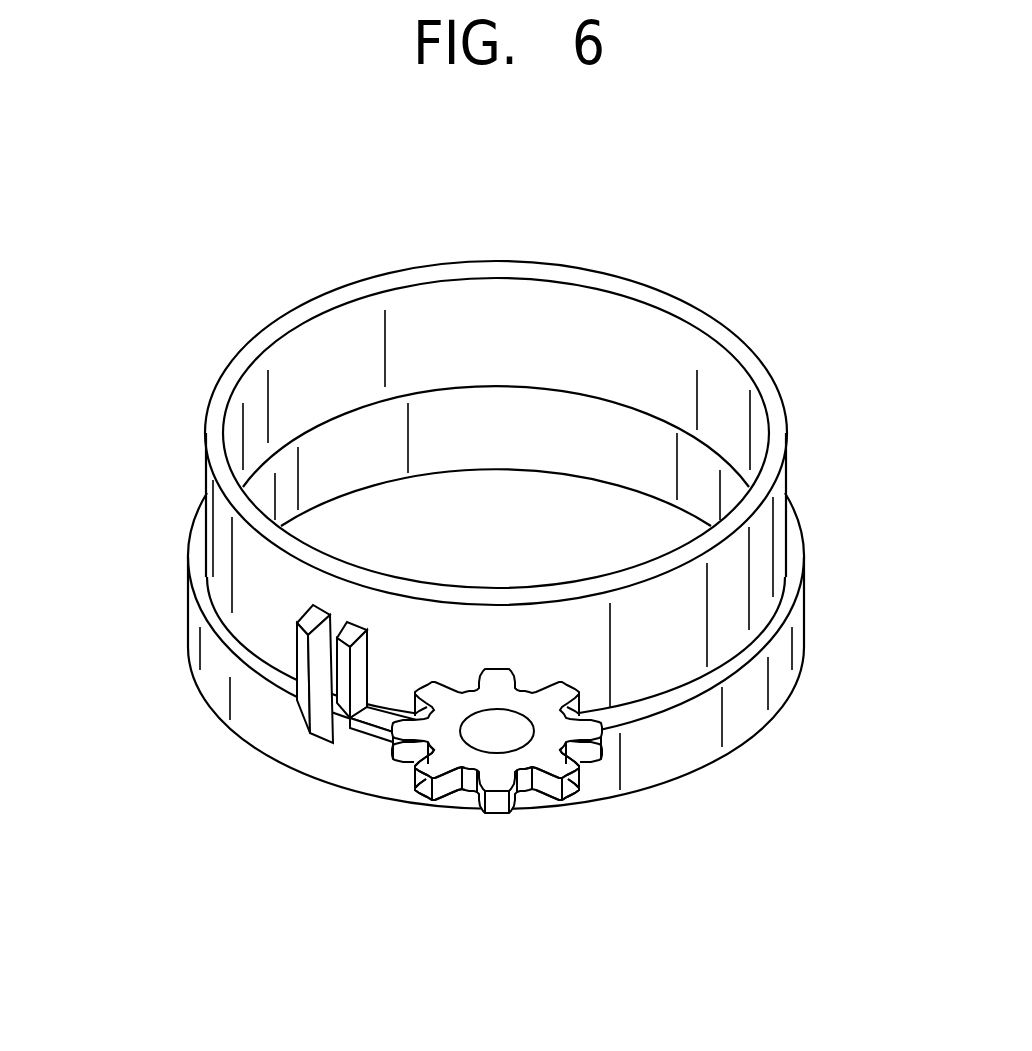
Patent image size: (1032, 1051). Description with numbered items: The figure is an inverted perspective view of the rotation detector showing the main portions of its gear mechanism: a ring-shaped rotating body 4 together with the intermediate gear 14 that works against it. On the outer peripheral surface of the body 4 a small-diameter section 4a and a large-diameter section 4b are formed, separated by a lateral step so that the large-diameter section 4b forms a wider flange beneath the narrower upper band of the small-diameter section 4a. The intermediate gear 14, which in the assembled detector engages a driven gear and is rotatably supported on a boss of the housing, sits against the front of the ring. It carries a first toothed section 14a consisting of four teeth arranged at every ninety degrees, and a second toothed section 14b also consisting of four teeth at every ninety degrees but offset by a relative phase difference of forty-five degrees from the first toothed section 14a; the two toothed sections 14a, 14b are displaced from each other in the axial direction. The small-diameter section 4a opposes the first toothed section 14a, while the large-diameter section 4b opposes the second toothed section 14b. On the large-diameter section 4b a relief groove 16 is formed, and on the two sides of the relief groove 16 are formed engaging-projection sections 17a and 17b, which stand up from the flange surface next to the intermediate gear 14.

The rotor 4 is at (740, 337).
The small-diameter section 4a is at (788, 480).
The large-diameter section 4b is at (797, 628).
The intermediate gear 14 is at (471, 842).
The first toothed section 14a is at (405, 753).
The second toothed section 14b is at (562, 800).
The relief groove 16 is at (314, 699).
The engaging-projection section 17a is at (291, 646).
The engaging-projection section 17b is at (353, 669).